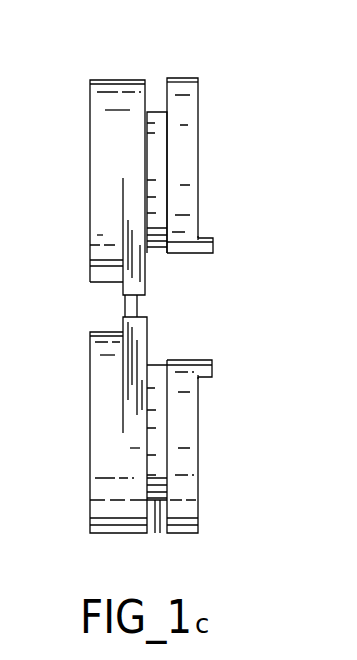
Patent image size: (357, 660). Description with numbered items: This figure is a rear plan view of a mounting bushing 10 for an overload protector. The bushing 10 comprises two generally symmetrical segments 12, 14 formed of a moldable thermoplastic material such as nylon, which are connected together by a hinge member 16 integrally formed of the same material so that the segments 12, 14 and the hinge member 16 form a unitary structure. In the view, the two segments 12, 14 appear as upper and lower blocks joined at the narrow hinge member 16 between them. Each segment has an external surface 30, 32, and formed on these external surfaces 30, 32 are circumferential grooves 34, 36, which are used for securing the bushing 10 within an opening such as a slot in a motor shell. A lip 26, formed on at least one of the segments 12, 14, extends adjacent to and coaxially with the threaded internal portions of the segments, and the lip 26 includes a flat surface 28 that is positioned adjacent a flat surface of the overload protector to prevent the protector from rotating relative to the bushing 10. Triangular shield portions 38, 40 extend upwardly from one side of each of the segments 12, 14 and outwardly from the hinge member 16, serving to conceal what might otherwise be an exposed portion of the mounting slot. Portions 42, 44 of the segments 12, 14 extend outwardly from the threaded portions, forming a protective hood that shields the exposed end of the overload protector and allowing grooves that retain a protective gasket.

The mounting bushing 10 is at (206, 72).
The segment 12 is at (205, 143).
The segment 14 is at (203, 463).
The hinge member 16 is at (124, 306).
The lip 26 is at (214, 247).
The flat surface 28 is at (203, 237).
The external surface 30 is at (103, 150).
The external surface 32 is at (93, 468).
The circumferential groove 34 is at (156, 108).
The circumferential groove 36 is at (157, 536).
The triangular shield portion 38 is at (148, 268).
The triangular shield portion 40 is at (136, 344).
The portion 42 is at (114, 73).
The portion 44 is at (118, 539).